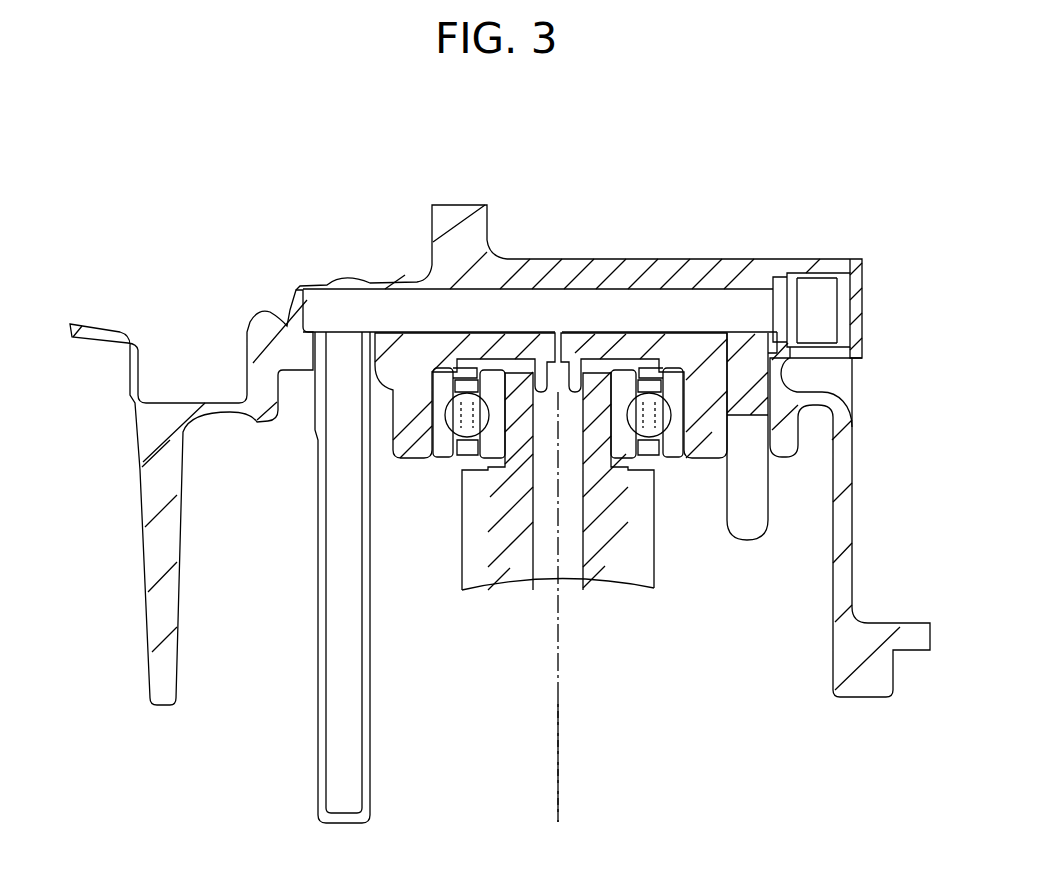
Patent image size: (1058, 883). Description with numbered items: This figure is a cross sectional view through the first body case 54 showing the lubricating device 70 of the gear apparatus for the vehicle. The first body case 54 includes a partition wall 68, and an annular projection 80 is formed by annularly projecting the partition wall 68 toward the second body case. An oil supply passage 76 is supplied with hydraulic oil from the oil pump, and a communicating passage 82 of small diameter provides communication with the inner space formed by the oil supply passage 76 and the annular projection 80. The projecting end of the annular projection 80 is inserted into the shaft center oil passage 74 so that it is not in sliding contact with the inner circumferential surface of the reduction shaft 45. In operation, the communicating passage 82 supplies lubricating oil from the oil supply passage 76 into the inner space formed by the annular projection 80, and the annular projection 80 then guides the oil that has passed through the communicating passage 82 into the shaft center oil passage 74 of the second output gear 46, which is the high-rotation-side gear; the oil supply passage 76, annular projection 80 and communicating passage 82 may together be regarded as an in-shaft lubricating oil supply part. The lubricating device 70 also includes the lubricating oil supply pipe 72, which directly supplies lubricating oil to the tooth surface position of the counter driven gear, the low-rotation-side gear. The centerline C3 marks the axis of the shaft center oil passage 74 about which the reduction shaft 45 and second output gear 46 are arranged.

The lubricating device 70 is at (349, 192).
The first body case 54 is at (276, 302).
The partition wall 68 is at (445, 278).
The oil supply passage 76 is at (643, 302).
The lubricating oil supply pipe 72 is at (318, 648).
The communicating passage 82 is at (559, 332).
The annular projection 80 is at (537, 370).
The reduction shaft 45 is at (608, 565).
The second output gear 46 is at (642, 513).
The shaft center oil passage 74 is at (580, 533).
The center axis C3 is at (558, 795).